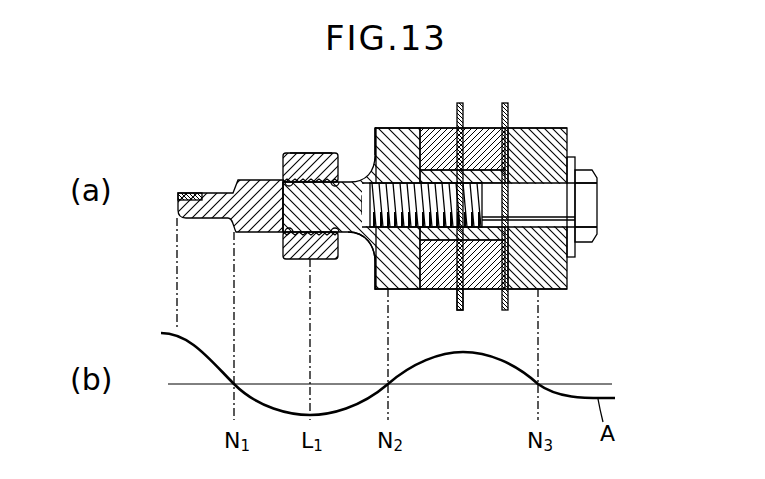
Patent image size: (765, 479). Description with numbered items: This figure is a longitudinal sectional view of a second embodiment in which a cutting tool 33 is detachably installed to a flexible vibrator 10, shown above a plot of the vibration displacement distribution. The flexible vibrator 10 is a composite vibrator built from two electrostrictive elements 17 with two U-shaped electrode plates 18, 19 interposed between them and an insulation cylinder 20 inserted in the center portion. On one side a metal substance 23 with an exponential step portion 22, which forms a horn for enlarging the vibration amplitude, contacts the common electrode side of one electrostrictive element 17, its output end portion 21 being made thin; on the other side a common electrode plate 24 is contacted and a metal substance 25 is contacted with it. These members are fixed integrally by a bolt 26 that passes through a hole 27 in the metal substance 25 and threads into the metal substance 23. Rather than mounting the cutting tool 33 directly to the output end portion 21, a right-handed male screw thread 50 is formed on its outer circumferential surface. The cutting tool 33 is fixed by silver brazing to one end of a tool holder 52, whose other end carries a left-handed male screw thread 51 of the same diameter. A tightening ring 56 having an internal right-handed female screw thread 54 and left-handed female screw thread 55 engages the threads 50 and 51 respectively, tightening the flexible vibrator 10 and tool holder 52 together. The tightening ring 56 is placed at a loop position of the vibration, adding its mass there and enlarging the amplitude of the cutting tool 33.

The flexible vibrator 10 is at (548, 135).
The electrostrictive element 17 is at (476, 128).
The electrode plate 18 is at (445, 152).
The electrode plate 19 is at (466, 308).
The insulation cylinder 20 is at (445, 265).
The output end portion 21 is at (313, 156).
The exponential step portion 22 is at (378, 275).
The metal substance 23 is at (385, 145).
The common electrode plate 24 is at (508, 126).
The metal substance 25 is at (545, 160).
The bolt 26 is at (593, 205).
The hole 27 is at (550, 220).
The cutting tool 33 is at (185, 190).
The right-handed male screw thread 50 is at (356, 238).
The left-handed male screw thread 51 is at (296, 259).
The tool holder 52 is at (230, 200).
The right-handed female screw thread 54 is at (347, 180).
The left-handed female screw thread 55 is at (283, 190).
The tightening ring 56 is at (295, 153).